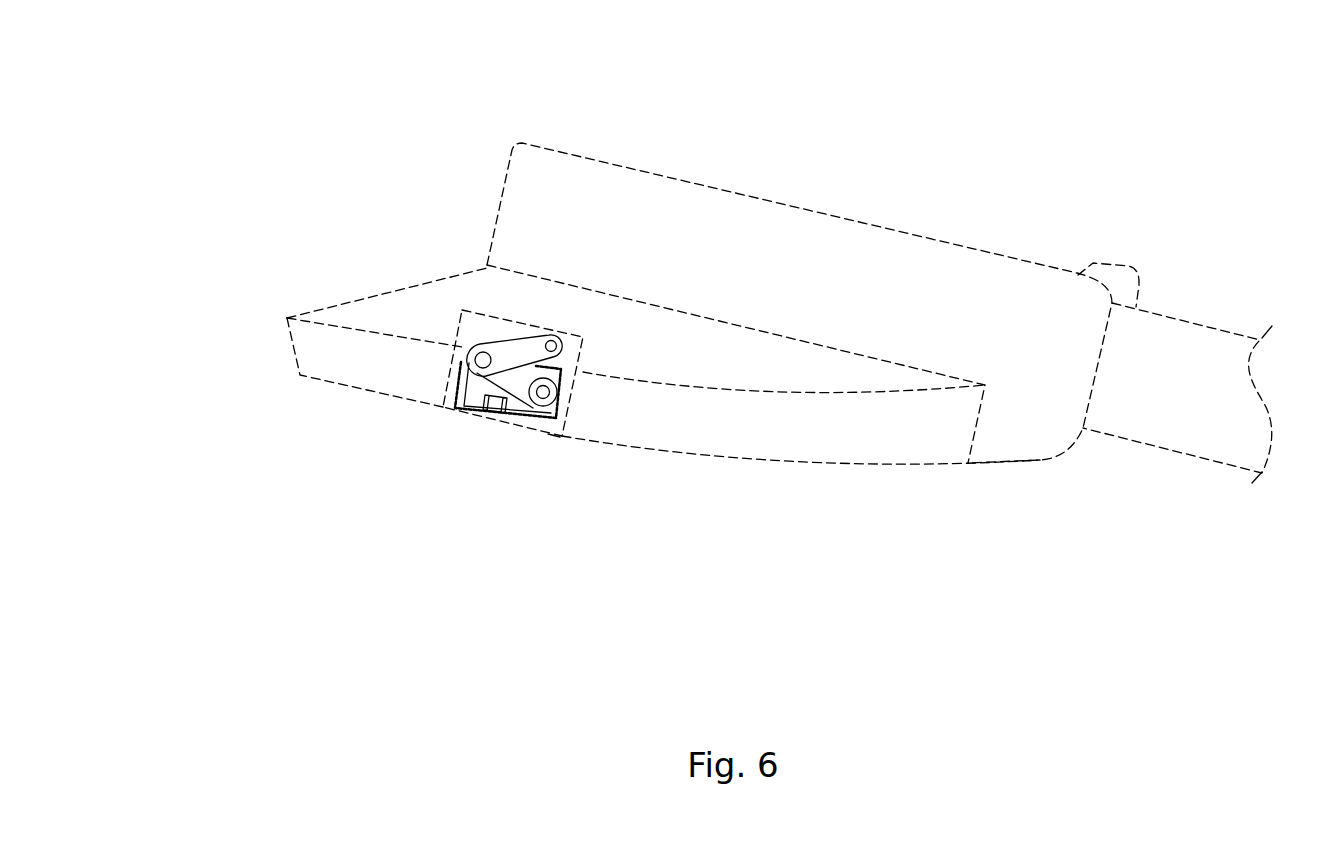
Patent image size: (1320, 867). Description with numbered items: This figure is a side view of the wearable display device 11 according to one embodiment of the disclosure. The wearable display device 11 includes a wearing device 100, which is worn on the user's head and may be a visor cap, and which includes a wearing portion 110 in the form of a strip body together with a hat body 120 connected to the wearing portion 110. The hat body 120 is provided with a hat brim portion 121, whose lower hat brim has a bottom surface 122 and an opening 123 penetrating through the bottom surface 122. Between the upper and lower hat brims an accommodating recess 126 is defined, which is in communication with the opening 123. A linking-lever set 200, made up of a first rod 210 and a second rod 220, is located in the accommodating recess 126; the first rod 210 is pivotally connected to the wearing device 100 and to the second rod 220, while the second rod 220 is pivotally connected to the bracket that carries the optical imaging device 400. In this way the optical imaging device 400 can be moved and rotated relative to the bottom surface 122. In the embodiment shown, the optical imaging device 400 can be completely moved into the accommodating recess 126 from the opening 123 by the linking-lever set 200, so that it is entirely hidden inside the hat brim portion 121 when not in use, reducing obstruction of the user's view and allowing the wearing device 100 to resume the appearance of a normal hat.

The wearable display device 11 is at (258, 61).
The wearing device 100 is at (938, 192).
The wearing portion 110 is at (1166, 336).
The hat body 120 is at (920, 308).
The hat brim portion 121 is at (287, 318).
The bottom surface 122 is at (318, 378).
The opening 123 is at (552, 431).
The accommodating recess 126 is at (488, 311).
The linking-lever set 200 is at (597, 525).
The first rod 210 is at (508, 363).
The second rod 220 is at (520, 393).
The optical imaging device 400 is at (470, 412).